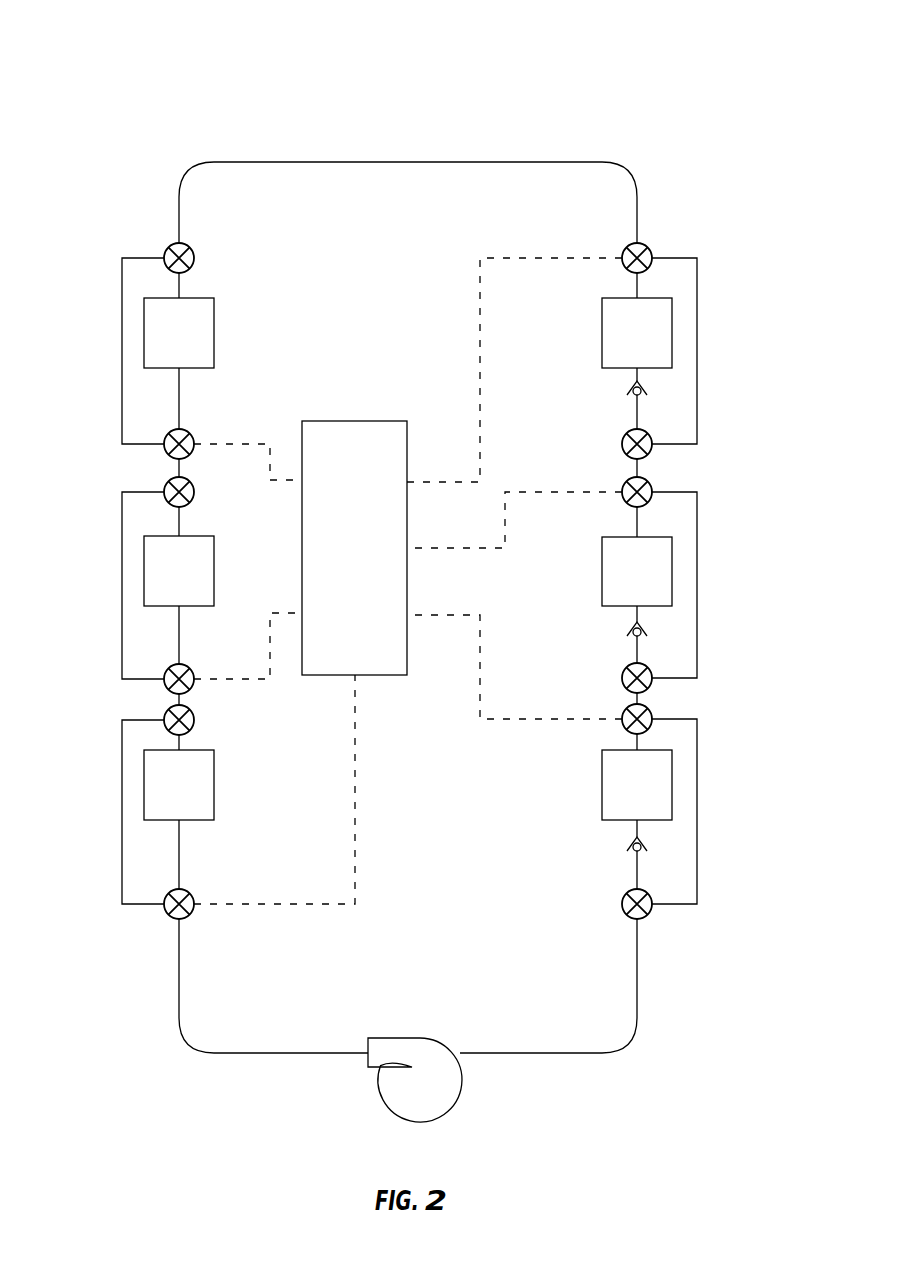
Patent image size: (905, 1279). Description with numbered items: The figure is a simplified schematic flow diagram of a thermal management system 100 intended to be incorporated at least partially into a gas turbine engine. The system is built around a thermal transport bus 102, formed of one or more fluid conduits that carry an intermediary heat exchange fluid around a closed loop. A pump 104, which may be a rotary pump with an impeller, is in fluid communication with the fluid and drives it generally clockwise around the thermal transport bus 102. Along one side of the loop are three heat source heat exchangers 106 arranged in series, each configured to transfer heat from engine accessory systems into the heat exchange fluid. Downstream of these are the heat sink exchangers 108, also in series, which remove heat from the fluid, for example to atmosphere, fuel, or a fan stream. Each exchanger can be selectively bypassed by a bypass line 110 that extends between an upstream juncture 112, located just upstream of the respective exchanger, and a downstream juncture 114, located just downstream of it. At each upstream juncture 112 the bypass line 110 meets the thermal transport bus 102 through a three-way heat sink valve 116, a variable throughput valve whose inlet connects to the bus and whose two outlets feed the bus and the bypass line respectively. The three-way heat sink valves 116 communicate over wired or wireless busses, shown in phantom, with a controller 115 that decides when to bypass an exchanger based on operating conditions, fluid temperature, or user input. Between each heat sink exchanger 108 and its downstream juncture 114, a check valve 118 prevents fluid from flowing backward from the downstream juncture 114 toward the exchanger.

The thermal management system 100 is at (74, 84).
The thermal transport bus 102 is at (216, 162).
The pump 104 is at (422, 1040).
The heat source heat exchanger 106 is at (214, 317).
The heat sink exchanger 108 is at (608, 345).
The bypass line 110 is at (122, 343).
The upstream juncture 112 is at (662, 250).
The downstream juncture 114 is at (165, 250).
The controller 115 is at (345, 440).
The three-way heat sink valve 116 is at (190, 437).
The check valve 118 is at (624, 393).